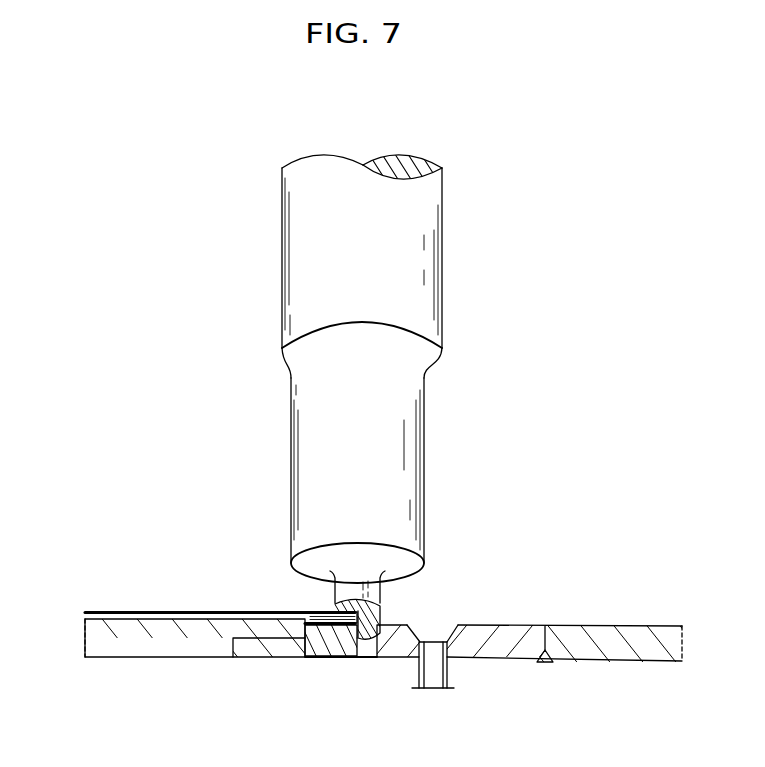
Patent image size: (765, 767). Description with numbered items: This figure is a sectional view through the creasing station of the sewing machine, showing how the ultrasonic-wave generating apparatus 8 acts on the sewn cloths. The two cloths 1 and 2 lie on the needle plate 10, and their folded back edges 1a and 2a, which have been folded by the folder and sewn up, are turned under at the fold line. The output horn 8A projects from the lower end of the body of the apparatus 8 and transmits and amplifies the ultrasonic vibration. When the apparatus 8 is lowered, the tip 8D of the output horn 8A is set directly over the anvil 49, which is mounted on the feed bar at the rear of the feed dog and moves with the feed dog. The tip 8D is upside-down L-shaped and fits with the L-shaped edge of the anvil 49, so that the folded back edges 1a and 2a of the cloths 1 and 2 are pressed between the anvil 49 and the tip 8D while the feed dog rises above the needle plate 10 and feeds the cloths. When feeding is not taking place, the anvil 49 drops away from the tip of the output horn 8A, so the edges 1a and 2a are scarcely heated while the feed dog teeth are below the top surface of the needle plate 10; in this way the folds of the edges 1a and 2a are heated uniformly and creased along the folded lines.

The cloth 1 is at (112, 610).
The edge of cloth 1a is at (312, 610).
The cloth 2 is at (137, 620).
The edge of cloth 2a is at (317, 660).
The ultrasonic-wave generating apparatus 8 is at (443, 298).
The output horn 8A is at (417, 493).
The tip of output horn 8D is at (368, 618).
The needle plate 10 is at (508, 659).
The anvil 49 is at (357, 662).